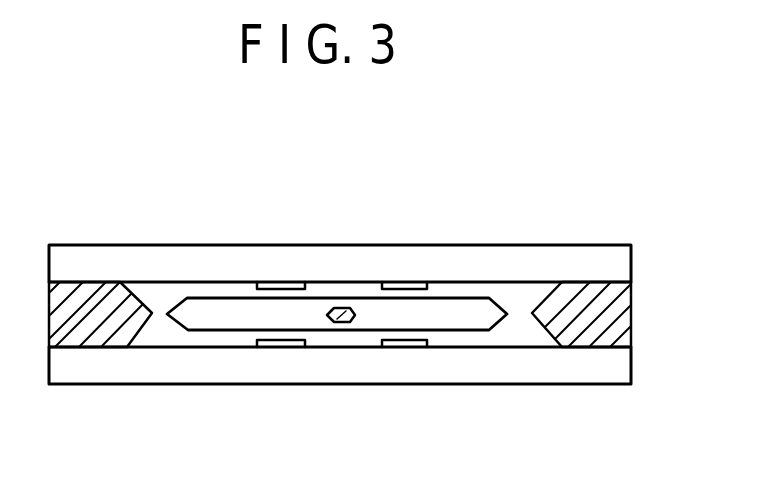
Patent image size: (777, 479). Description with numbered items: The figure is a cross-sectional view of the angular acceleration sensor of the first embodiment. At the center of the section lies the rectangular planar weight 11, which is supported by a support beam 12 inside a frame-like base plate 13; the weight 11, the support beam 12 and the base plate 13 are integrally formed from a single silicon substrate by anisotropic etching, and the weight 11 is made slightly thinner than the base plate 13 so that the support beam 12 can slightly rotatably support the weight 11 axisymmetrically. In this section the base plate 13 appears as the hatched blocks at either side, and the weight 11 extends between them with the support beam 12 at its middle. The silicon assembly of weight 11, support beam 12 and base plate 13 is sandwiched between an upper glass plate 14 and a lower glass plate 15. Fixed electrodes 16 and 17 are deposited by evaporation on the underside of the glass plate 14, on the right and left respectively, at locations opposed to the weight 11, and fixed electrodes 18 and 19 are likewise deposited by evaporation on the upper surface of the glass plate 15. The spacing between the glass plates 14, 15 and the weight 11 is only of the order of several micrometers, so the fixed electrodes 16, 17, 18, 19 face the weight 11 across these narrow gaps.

The weight 11 is at (467, 307).
The support beam 12 is at (342, 322).
The base plate 13 is at (622, 295).
The glass plate 14 is at (158, 255).
The glass plate 15 is at (127, 372).
The fixed electrode 16 is at (404, 287).
The fixed electrode 17 is at (280, 287).
The fixed electrode 18 is at (412, 343).
The fixed electrode 19 is at (283, 342).